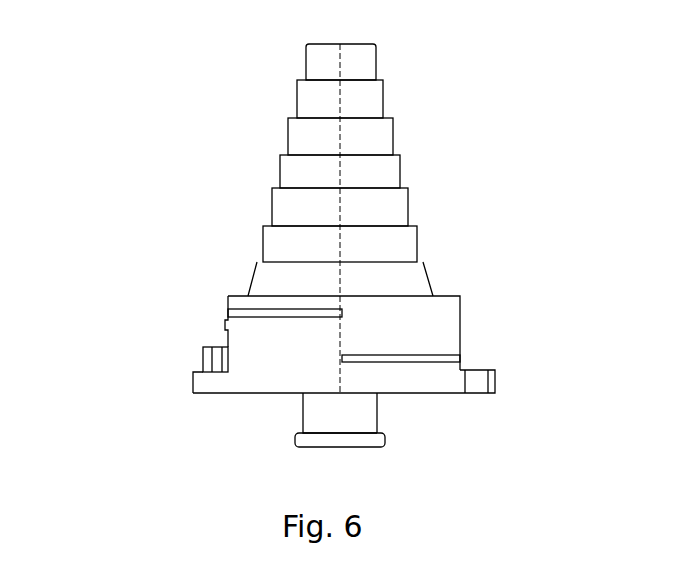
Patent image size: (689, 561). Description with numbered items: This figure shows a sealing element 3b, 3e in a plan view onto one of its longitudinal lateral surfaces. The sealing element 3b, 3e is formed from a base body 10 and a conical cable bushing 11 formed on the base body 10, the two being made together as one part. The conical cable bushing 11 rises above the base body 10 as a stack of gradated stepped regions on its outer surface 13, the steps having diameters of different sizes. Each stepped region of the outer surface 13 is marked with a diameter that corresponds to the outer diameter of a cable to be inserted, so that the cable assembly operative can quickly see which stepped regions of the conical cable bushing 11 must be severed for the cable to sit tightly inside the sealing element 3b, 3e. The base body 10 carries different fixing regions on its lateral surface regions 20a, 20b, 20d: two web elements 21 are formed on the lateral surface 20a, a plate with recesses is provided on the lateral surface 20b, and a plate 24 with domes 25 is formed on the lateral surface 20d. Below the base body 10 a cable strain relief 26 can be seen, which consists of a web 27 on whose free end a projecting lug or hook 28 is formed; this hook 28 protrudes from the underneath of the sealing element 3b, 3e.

The sealing element 3b is at (258, 186).
The sealing element 3e is at (243, 227).
The base body 10 is at (332, 350).
The conical cable bushing 11 is at (302, 168).
The outer surface 13 is at (288, 142).
The lateral surface 20a is at (400, 382).
The lateral surface 20b is at (483, 382).
The lateral surface 20d is at (228, 330).
The web element 21 is at (275, 318).
The plate 24 is at (205, 383).
The dome 25 is at (213, 358).
The cable strain relief 26 is at (377, 415).
The web 27 is at (315, 417).
The projecting lug or hook 28 is at (345, 447).